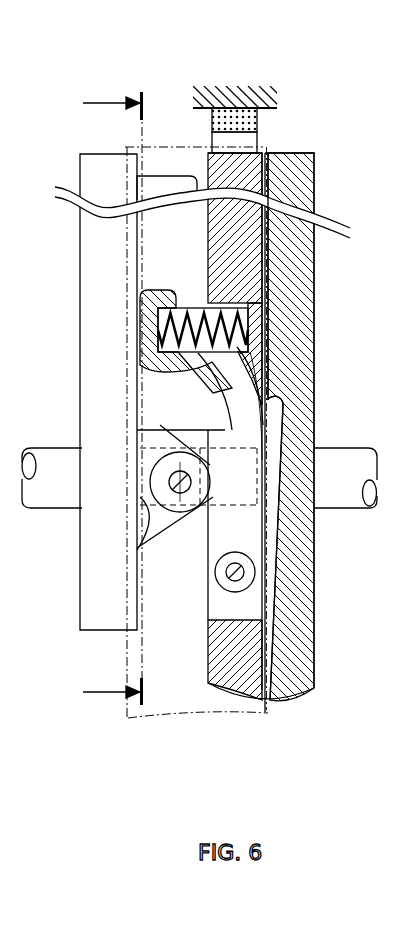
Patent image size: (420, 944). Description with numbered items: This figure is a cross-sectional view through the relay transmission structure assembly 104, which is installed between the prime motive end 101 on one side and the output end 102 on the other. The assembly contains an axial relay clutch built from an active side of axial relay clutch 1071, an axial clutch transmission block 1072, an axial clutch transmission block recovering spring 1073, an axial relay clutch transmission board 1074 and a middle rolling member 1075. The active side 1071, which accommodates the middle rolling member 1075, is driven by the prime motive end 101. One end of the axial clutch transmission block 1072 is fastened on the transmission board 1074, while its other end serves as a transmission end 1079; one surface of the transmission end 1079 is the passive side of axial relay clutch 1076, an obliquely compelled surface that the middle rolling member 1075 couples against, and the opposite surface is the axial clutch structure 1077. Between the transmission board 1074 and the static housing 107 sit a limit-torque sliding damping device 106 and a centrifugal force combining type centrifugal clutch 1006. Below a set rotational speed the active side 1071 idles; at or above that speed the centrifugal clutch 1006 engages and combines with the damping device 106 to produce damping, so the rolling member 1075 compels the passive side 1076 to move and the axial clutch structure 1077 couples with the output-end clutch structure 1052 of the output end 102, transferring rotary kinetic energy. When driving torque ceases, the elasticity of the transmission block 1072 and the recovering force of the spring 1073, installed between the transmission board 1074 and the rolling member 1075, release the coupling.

The prime motive end 101 is at (65, 512).
The output end 102 is at (342, 447).
The relay transmission structure assembly 104 is at (172, 145).
The limit-torque sliding damping device 106 is at (250, 120).
The static housing 107 is at (223, 95).
The centrifugal force combining type centrifugal clutch 1006 is at (254, 140).
The output-end clutch structure 1052 is at (282, 418).
The active side of axial relay clutch 1071 is at (143, 578).
The axial clutch transmission block 1072 is at (237, 530).
The axial clutch transmission block recovering spring 1073 is at (200, 305).
The axial relay clutch transmission board 1074 is at (240, 660).
The middle rolling member 1075 is at (198, 509).
The passive side of axial relay clutch 1076 is at (193, 393).
The axial clutch structure 1077 is at (245, 400).
The transmission end 1079 is at (160, 430).